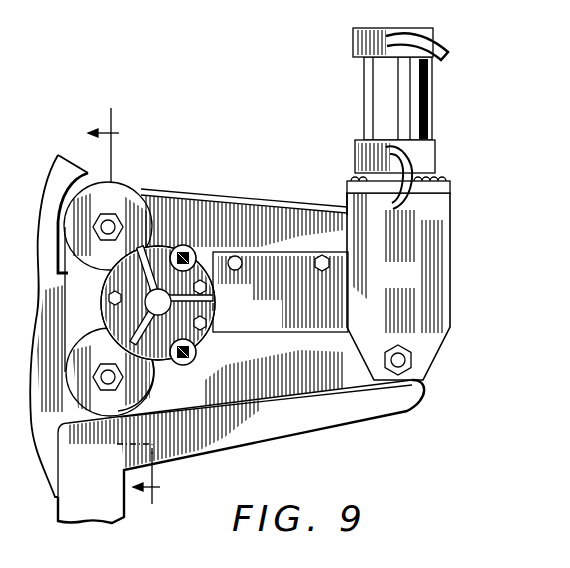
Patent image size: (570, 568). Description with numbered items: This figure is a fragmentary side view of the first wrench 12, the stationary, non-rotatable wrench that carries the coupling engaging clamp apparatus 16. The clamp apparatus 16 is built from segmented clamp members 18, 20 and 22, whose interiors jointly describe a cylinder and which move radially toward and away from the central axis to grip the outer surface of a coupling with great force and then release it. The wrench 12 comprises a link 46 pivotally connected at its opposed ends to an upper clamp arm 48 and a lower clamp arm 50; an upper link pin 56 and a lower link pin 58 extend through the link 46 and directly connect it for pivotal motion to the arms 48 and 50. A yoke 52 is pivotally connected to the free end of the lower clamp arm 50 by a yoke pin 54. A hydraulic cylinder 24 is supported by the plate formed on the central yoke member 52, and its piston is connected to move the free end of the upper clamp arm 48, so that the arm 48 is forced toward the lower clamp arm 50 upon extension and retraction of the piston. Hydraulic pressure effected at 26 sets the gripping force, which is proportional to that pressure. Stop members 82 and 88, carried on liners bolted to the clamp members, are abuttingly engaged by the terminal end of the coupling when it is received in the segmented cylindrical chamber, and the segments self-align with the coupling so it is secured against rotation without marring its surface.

The first wrench 12 is at (141, 306).
The coupling engaging clamp apparatus 16 is at (166, 232).
The segmented clamp member 18 is at (164, 346).
The segmented clamp member 20 is at (173, 248).
The segmented clamp member 22 is at (110, 283).
The hydraulic cylinder 24 is at (353, 38).
The hydraulic pressure connection 26 is at (391, 62).
The link 46 is at (99, 347).
The upper clamp arm 48 is at (258, 200).
The lower clamp arm 50 is at (289, 383).
The yoke 52 is at (411, 286).
The yoke pin 54 is at (413, 362).
The upper link pin 56 is at (116, 212).
The lower link pin 58 is at (102, 380).
The stop member 82 is at (215, 290).
The stop member 88 is at (215, 307).